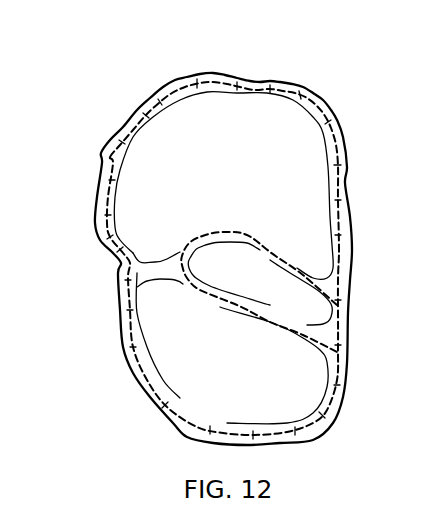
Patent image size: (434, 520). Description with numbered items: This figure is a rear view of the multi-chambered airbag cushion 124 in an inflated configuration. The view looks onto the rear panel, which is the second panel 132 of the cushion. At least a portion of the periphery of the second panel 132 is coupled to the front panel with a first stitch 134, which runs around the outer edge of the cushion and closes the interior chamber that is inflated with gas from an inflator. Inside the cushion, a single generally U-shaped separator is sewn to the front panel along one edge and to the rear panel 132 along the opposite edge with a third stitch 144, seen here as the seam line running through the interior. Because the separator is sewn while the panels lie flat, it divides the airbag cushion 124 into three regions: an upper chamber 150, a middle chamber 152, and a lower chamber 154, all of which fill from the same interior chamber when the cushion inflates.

The airbag cushion 124 is at (327, 77).
The second panel 132 is at (138, 181).
The first stitch 134 is at (284, 92).
The third stitch 144 is at (211, 233).
The upper chamber 150 is at (222, 110).
The middle chamber 152 is at (315, 313).
The lower chamber 154 is at (162, 338).